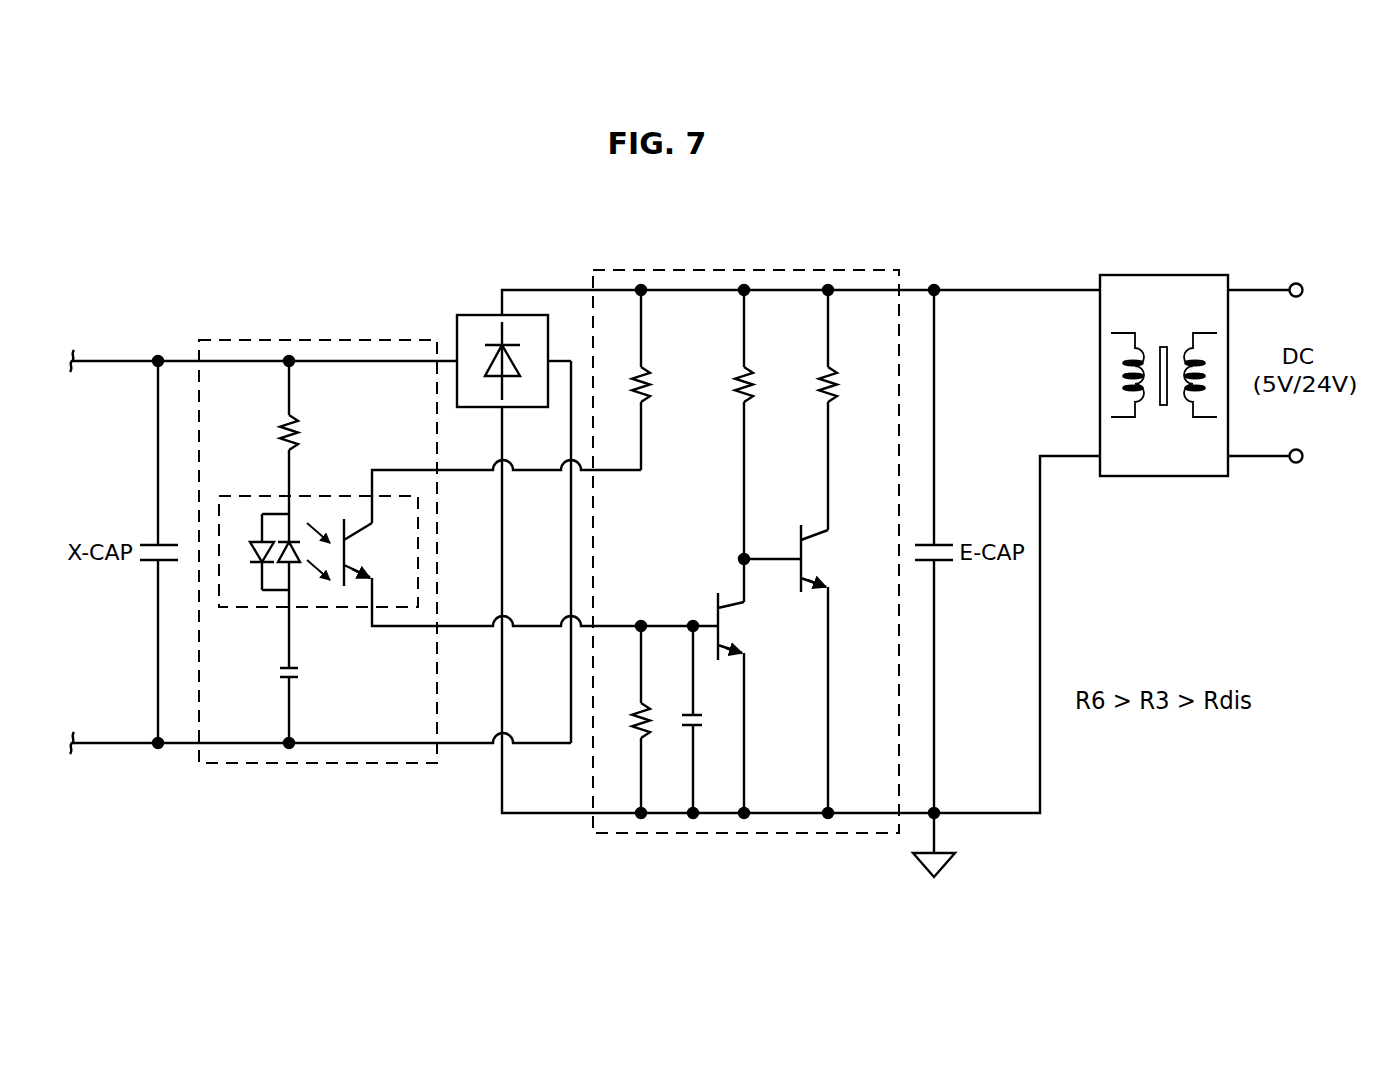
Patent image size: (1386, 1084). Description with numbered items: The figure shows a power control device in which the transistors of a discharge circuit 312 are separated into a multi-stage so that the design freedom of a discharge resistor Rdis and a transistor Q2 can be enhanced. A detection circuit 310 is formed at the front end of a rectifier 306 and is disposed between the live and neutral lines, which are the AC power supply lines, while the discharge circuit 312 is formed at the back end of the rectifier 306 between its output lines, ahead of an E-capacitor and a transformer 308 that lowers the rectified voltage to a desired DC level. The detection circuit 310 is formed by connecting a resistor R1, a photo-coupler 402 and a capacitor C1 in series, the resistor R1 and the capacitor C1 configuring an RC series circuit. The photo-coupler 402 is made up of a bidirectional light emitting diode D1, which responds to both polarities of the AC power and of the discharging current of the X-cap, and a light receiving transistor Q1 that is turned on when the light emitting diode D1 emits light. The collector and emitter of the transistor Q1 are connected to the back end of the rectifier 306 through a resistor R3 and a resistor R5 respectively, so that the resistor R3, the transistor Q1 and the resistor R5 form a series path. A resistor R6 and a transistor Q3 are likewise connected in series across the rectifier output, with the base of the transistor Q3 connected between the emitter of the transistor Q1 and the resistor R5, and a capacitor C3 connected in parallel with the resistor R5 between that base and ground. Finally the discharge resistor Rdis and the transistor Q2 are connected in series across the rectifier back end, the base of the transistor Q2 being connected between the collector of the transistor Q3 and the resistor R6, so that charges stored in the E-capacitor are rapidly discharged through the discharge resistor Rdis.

The rectifier 306 is at (457, 315).
The transformer 308 is at (1163, 275).
The detection circuit 310 is at (307, 340).
The discharge circuit 312 is at (742, 270).
The photo-coupler 402 is at (268, 608).
The resistor R1 is at (307, 437).
The capacitor C1 is at (307, 666).
The light emitting diode D1 is at (279, 550).
The transistor Q1 is at (376, 552).
The resistor R3 is at (659, 380).
The resistor R6 is at (762, 446).
The discharge resistor Rdis is at (854, 410).
The transistor Q2 is at (800, 669).
The transistor Q3 is at (748, 703).
The resistor R5 is at (627, 719).
The capacitor C3 is at (709, 719).